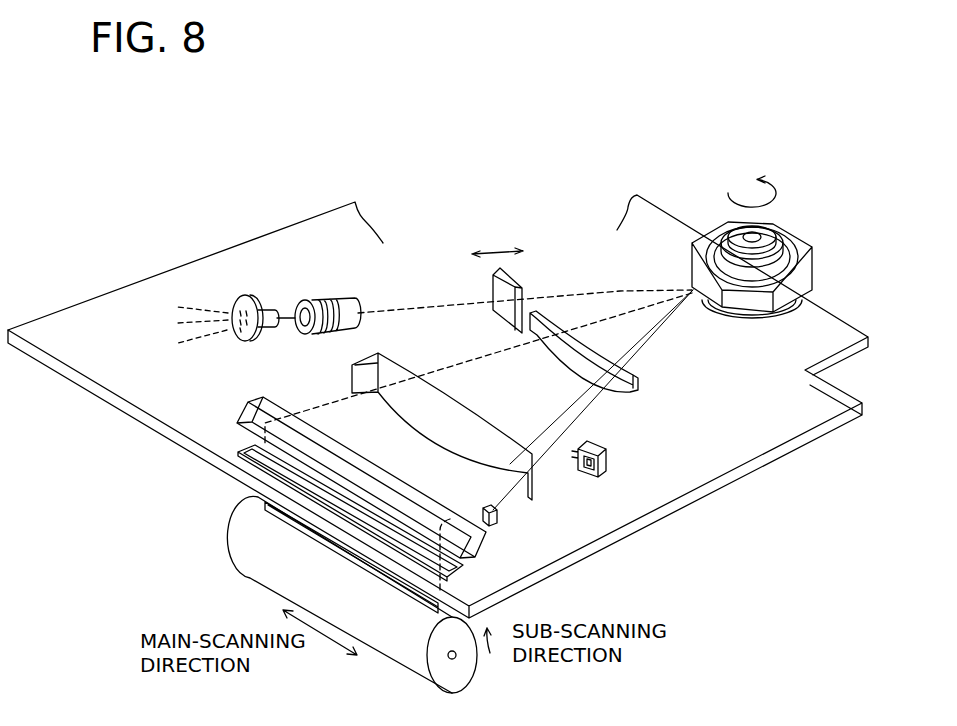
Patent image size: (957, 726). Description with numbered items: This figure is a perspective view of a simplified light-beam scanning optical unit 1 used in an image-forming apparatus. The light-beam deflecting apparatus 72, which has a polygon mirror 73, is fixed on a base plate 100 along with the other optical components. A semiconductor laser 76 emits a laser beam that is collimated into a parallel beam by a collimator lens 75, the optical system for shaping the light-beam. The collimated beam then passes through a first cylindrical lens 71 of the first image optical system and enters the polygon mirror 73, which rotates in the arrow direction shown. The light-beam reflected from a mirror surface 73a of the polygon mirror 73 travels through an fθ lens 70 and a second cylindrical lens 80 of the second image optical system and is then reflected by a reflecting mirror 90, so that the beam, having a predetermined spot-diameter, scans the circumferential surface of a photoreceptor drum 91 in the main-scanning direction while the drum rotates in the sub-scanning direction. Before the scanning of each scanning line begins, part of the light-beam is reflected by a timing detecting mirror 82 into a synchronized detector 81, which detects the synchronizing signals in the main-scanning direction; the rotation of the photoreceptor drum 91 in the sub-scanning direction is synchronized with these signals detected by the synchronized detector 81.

The laser scanning unit 1 is at (587, 200).
The fθ lens 70 is at (565, 357).
The first cylindrical lens 71 is at (517, 280).
The light-beam deflecting apparatus 72 is at (805, 228).
The polygon mirror 73 is at (697, 253).
The mirror surface 73a is at (713, 298).
The collimator lens 75 is at (343, 305).
The semiconductor laser 76 is at (248, 305).
The second cylindrical lens 80 is at (470, 413).
The synchronized detector 81 is at (588, 478).
The timing detecting mirror 82 is at (498, 518).
The reflecting mirror 90 is at (482, 548).
The photoreceptor drum 91 is at (237, 530).
The base plate 100 is at (722, 458).